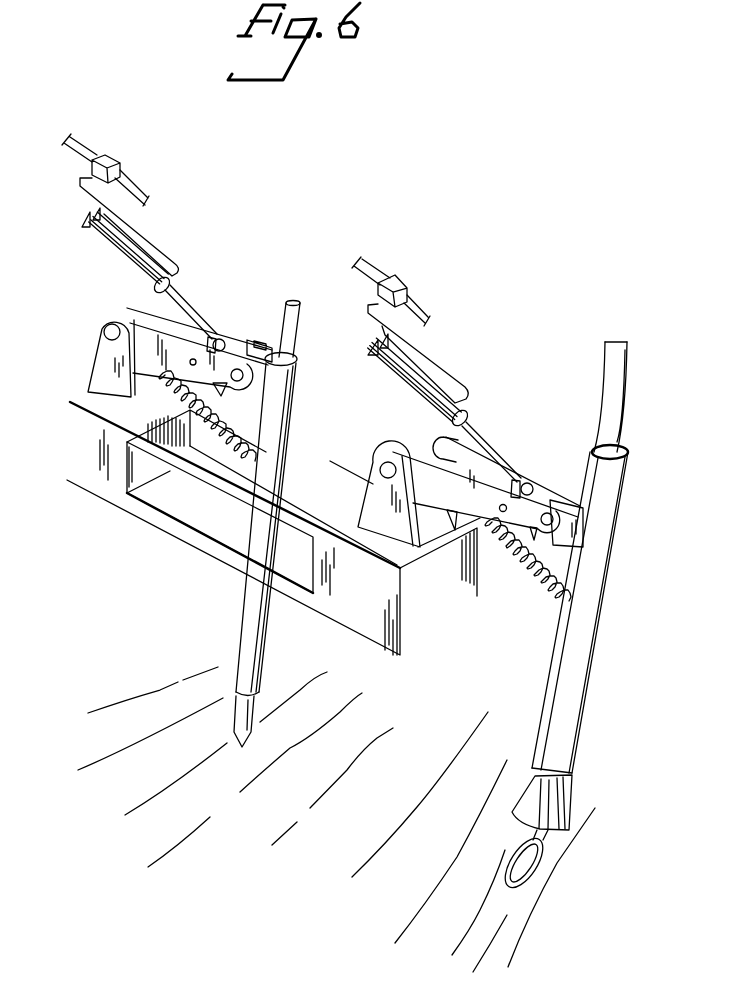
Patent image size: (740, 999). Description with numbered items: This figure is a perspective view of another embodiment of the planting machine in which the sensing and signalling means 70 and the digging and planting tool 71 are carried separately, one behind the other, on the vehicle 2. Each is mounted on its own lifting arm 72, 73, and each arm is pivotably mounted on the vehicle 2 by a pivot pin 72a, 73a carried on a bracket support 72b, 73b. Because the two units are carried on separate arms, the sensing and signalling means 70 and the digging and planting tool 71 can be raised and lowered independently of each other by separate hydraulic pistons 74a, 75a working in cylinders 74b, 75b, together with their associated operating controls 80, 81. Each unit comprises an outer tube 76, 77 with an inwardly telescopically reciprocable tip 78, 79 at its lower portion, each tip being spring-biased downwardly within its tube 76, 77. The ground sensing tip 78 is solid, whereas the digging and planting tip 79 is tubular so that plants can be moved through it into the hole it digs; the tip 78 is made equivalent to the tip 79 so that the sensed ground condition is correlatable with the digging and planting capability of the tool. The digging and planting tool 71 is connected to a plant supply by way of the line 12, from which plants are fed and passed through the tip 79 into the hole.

The vehicle 2 is at (72, 426).
The line 12 is at (621, 371).
The sensing and signalling means 70 is at (203, 582).
The digging and planting tool 71 is at (620, 758).
The lifting arm 72 is at (128, 307).
The pivot pin 72a is at (106, 334).
The bracket support 72b is at (152, 380).
The lifting arm 73 is at (401, 462).
The pivot pin 73a is at (386, 467).
The bracket support 73b is at (447, 522).
The hydraulic piston 74a is at (180, 300).
The hydraulic cylinder 74b is at (115, 241).
The hydraulic piston 75a is at (478, 428).
The hydraulic cylinder 75b is at (406, 367).
The outer tube 76 is at (251, 601).
The outer tube 77 is at (564, 748).
The tip 78 is at (234, 697).
The tip 79 is at (548, 849).
The operating control 80 is at (92, 167).
The operating control 81 is at (395, 283).